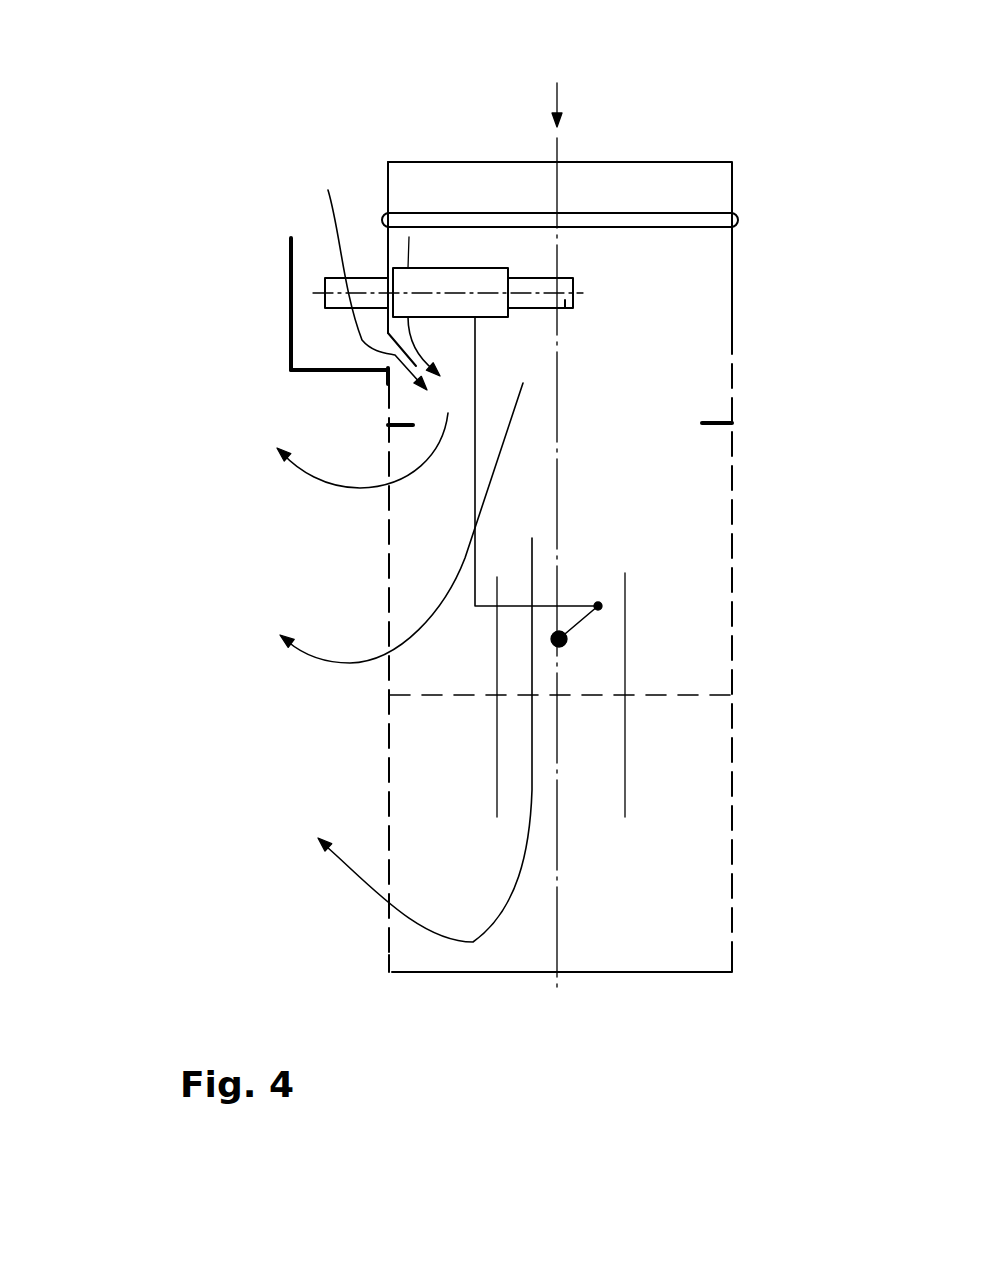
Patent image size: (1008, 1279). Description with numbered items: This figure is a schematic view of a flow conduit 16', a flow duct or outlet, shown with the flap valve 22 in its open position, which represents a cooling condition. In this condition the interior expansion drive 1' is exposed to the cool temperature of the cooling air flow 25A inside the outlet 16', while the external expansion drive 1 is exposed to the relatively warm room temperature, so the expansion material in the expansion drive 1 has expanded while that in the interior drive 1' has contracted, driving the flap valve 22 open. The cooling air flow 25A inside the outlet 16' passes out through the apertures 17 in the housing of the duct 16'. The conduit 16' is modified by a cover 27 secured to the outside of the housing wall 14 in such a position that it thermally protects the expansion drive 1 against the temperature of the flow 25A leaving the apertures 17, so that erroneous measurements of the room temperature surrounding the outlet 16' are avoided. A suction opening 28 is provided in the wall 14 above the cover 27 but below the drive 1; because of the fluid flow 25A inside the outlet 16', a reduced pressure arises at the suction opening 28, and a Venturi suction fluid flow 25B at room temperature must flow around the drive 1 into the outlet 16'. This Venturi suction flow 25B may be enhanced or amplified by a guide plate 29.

The expansion drive 1 is at (448, 164).
The interior expansion drive 1' is at (570, 311).
The housing wall 14 is at (388, 380).
The flow conduit 16' is at (647, 537).
The apertures 17 is at (733, 487).
The flap valve 22 is at (559, 597).
The cooling air flow 25A is at (349, 485).
The Venturi suction fluid flow 25B is at (332, 212).
The cover 27 is at (288, 302).
The suction opening 28 is at (387, 352).
The guide plate 29 is at (387, 370).